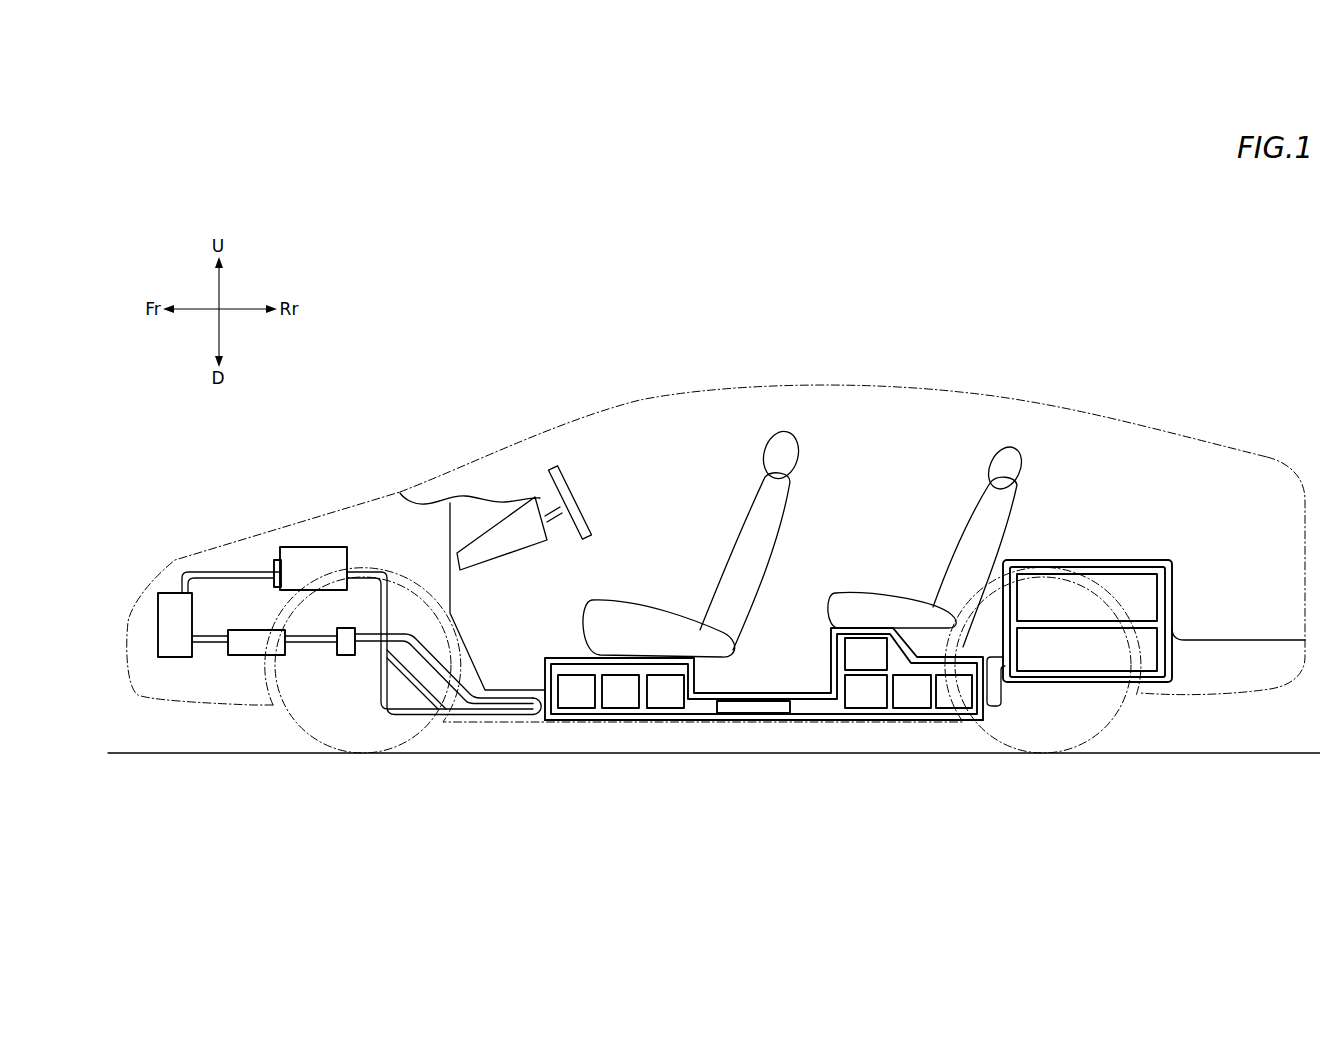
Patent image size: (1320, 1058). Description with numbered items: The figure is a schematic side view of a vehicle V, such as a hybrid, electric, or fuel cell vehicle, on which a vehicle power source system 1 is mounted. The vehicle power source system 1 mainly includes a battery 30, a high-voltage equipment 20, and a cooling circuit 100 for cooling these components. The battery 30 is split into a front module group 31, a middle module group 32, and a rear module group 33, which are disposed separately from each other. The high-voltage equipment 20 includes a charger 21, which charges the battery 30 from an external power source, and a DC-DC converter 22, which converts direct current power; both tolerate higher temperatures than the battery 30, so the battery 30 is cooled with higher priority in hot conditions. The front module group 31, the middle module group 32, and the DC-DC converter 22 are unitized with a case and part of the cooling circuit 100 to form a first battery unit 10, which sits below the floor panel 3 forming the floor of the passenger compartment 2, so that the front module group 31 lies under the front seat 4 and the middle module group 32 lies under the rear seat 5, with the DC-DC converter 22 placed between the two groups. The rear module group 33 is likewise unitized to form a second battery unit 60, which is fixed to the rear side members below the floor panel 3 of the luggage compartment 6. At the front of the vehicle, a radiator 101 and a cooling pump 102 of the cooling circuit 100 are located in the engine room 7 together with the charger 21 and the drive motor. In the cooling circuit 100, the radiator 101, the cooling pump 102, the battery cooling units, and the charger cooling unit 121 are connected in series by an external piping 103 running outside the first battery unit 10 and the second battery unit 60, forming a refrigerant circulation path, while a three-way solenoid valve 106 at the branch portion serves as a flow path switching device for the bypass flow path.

The vehicle power source system 1 is at (412, 558).
The vehicle V is at (997, 328).
The passenger compartment 2 is at (672, 474).
The floor panel 3 is at (548, 657).
The front seat 4 is at (635, 614).
The rear seat 5 is at (880, 600).
The luggage compartment 6 is at (1138, 493).
The engine room 7 is at (220, 612).
The first battery unit 10 is at (652, 721).
The high-voltage equipment 20 is at (535, 633).
The charger 21 is at (311, 546).
The DC-DC converter 22 is at (755, 716).
The battery 30 is at (846, 697).
The front module group 31 is at (566, 716).
The middle module group 32 is at (862, 712).
The rear module group 33 is at (1056, 675).
The second battery unit 60 is at (1172, 667).
The cooling circuit 100 is at (218, 568).
The radiator 101 is at (157, 633).
The cooling pump 102 is at (240, 656).
The external piping 103 is at (395, 716).
The three-way solenoid valve 106 is at (347, 656).
The charger cooling unit 121 is at (277, 560).